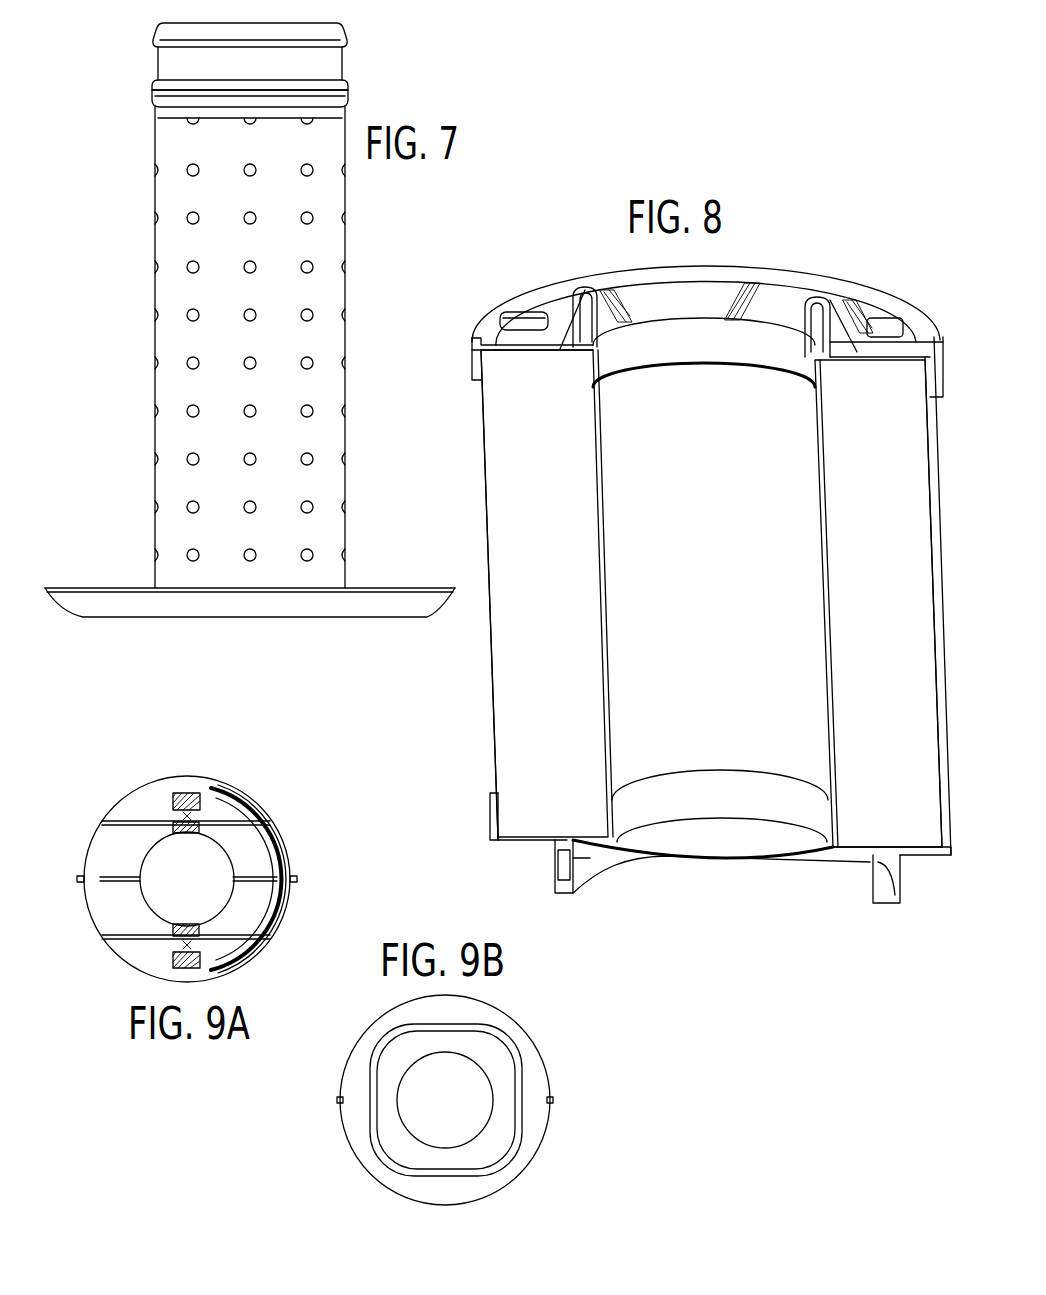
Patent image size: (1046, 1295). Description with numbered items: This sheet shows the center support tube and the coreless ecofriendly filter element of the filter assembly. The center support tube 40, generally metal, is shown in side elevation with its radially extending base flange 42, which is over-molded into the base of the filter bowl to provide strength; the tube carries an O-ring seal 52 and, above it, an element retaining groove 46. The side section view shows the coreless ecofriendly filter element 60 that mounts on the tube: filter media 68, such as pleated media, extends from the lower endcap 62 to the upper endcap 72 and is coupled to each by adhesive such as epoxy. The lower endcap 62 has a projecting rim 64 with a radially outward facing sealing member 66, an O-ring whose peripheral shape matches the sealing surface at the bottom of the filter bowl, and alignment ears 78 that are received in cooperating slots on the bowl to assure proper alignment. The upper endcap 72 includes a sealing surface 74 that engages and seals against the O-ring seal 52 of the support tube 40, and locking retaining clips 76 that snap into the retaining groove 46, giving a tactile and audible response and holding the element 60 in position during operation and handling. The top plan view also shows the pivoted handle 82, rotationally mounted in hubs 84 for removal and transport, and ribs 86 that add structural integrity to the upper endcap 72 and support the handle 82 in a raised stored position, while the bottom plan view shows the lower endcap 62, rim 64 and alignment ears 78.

In FIG. 7, the center support tube 40 is at (323, 293).
In FIG. 7, the base flange 42 is at (333, 606).
In FIG. 7, the element retaining groove 46 is at (340, 68).
In FIG. 7, the O-ring seal 52 is at (347, 90).
In FIG. 8, the coreless ecofriendly filter element 60 is at (468, 309).
In FIG. 8, the lower endcap 62 is at (490, 840).
In FIG. 9B, the lower endcap 62 is at (435, 1185).
In FIG. 8, the projecting rim 64 is at (590, 865).
In FIG. 9B, the projecting rim 64 is at (510, 1150).
In FIG. 8, the sealing member 66 is at (557, 873).
In FIG. 8, the filter media 68 is at (517, 642).
In FIG. 8, the upper endcap 72 is at (937, 330).
In FIG. 9A, the upper endcap 72 is at (107, 860).
In FIG. 8, the sealing surface 74 is at (753, 347).
In FIG. 8, the retaining clips 76 is at (590, 288).
In FIG. 9A, the retaining clips 76 is at (187, 834).
In FIG. 9A, the alignment ears 78 is at (297, 879).
In FIG. 9B, the alignment ears 78 is at (338, 1100).
In FIG. 9A, the pivoted handle 82 is at (200, 790).
In FIG. 9A, the hubs 84 is at (173, 800).
In FIG. 8, the ribs 86 is at (701, 324).
In FIG. 9A, the ribs 86 is at (120, 822).